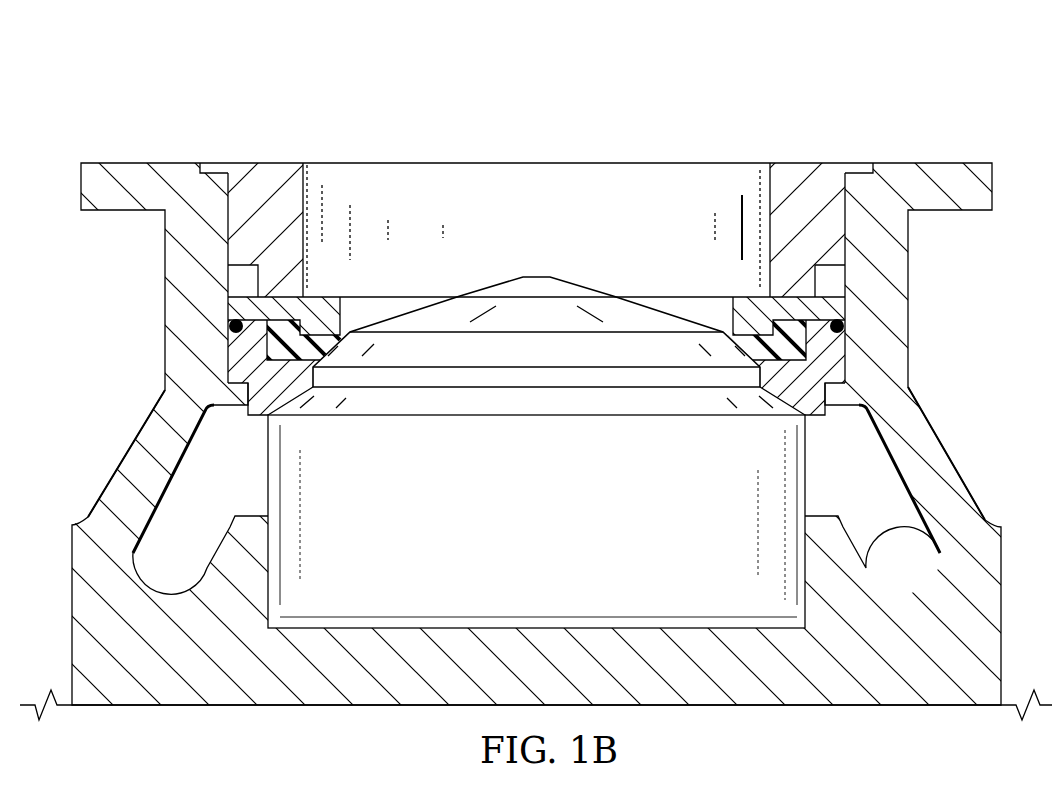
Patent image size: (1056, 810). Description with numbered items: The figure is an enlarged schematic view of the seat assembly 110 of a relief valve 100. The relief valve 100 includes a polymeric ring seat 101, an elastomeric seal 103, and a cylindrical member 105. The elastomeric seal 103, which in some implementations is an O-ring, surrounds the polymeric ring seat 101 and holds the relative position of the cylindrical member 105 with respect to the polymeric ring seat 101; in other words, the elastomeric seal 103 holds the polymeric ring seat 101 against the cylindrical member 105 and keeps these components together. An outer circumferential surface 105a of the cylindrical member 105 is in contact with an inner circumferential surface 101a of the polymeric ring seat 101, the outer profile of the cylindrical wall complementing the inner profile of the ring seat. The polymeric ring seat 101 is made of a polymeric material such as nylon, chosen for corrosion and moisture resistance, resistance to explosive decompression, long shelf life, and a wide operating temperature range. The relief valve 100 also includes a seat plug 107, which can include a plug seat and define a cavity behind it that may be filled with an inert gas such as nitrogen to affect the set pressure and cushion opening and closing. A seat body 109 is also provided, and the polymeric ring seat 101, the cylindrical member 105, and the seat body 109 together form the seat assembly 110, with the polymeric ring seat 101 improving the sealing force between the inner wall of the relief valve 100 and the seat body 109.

The relief valve 100 is at (442, 78).
The polymeric ring seat 101 is at (272, 337).
The inner circumferential surface 101a is at (846, 336).
The elastomeric seal 103 is at (858, 328).
The cylindrical member 105 is at (843, 307).
The outer circumferential surface 105a is at (767, 322).
The seat plug 107 is at (556, 537).
The seat body 109 is at (262, 411).
The seat assembly 110 is at (204, 297).